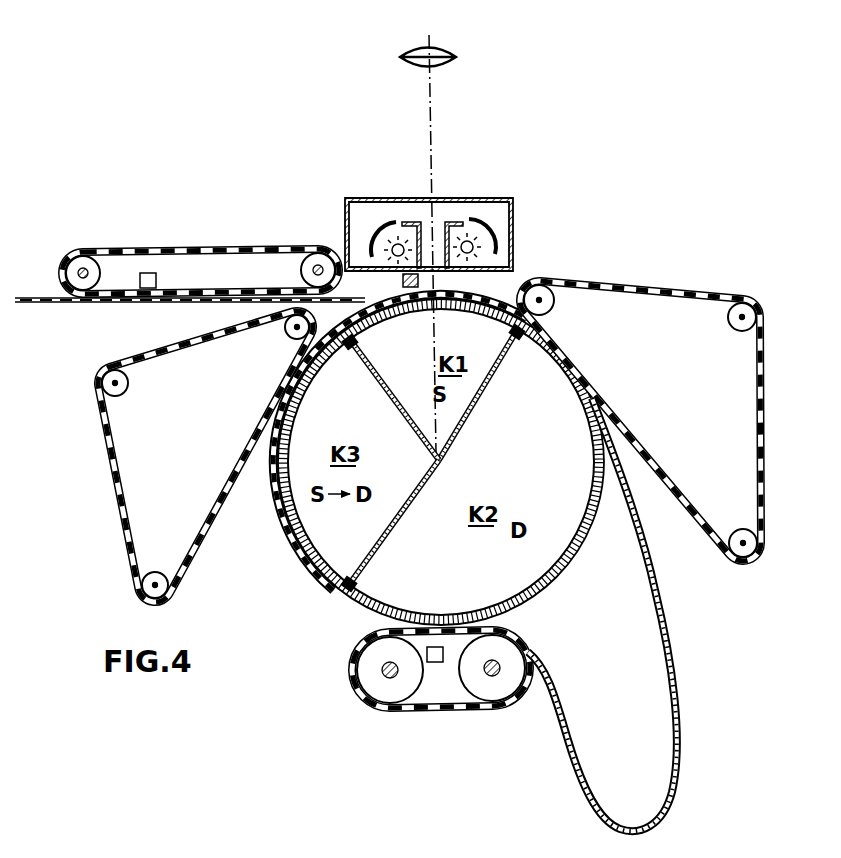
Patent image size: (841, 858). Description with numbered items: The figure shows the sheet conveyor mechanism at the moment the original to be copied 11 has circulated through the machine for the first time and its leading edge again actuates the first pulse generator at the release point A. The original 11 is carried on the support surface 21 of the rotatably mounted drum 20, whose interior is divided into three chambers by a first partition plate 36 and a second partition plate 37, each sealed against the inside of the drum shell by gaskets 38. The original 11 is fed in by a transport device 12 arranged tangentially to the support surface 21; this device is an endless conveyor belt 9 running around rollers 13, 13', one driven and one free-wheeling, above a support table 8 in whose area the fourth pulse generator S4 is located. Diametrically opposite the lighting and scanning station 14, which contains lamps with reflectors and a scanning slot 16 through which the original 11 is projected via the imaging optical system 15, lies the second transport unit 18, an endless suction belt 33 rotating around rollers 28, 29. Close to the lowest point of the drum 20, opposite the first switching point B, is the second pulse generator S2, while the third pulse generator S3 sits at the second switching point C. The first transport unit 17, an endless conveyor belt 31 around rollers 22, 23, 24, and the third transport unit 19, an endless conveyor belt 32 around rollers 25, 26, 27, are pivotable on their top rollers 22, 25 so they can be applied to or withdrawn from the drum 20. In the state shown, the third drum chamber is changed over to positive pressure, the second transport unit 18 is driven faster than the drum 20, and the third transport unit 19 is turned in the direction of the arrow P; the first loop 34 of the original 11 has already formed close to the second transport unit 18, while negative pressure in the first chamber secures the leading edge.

The support table 8 is at (40, 304).
The endless conveyor belt 9 is at (144, 252).
The original to be copied 11 is at (472, 308).
The transport device 12 is at (194, 273).
The roller 13 is at (75, 254).
The roller 13' is at (311, 251).
The lighting and scanning station 14 is at (456, 199).
The imaging optical system 15 is at (442, 52).
The scanning slot 16 is at (428, 230).
The first transport unit 17 is at (640, 404).
The second transport unit 18 is at (427, 696).
The third transport unit 19 is at (194, 456).
The drum 20 is at (578, 366).
The support surface 21 is at (572, 566).
The roller 22 is at (541, 284).
The roller 23 is at (735, 325).
The roller 24 is at (742, 534).
The roller 25 is at (290, 340).
The roller 26 is at (122, 394).
The roller 27 is at (154, 572).
The roller 28 is at (512, 688).
The roller 29 is at (370, 686).
The endless conveyor belt 31 is at (683, 302).
The endless conveyor belt 32 is at (114, 462).
The endless suction belt 33 is at (486, 712).
The first loop 34 is at (668, 622).
The first partition plate 36 is at (487, 386).
The second partition plate 37 is at (384, 390).
The gaskets 38 is at (358, 352).
The release point A is at (406, 312).
The first switching point B is at (437, 622).
The second switching point C is at (340, 366).
The arrow P is at (178, 535).
The second pulse generator S2 is at (434, 665).
The third pulse generator S3 is at (292, 328).
The fourth pulse generator S4 is at (150, 290).